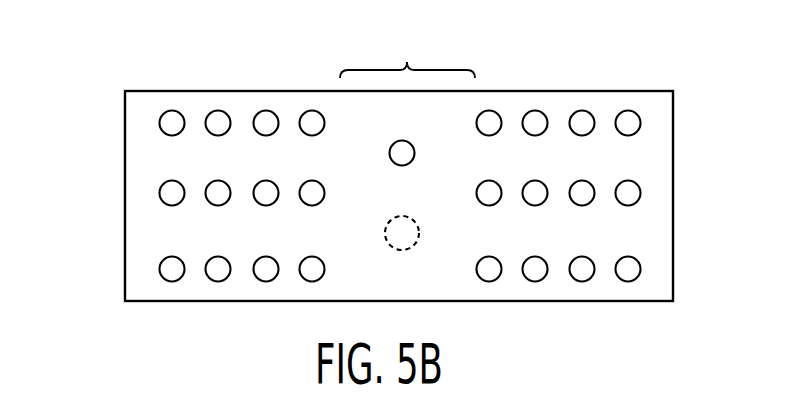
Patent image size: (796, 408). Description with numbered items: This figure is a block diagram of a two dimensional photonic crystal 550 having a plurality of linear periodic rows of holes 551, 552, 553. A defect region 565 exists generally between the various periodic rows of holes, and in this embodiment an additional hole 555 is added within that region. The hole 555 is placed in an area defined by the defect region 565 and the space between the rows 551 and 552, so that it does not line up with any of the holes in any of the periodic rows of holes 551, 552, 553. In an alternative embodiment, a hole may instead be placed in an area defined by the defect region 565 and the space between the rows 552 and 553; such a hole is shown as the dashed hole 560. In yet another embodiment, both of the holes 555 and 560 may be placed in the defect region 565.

The contact pad array substrate 550 is at (135, 182).
The periodic row of holes 551 is at (650, 121).
The periodic row of holes 552 is at (650, 190).
The periodic row of holes 553 is at (650, 269).
The hole 555 is at (392, 145).
The dashed hole 560 is at (413, 245).
The defect region 565 is at (407, 51).